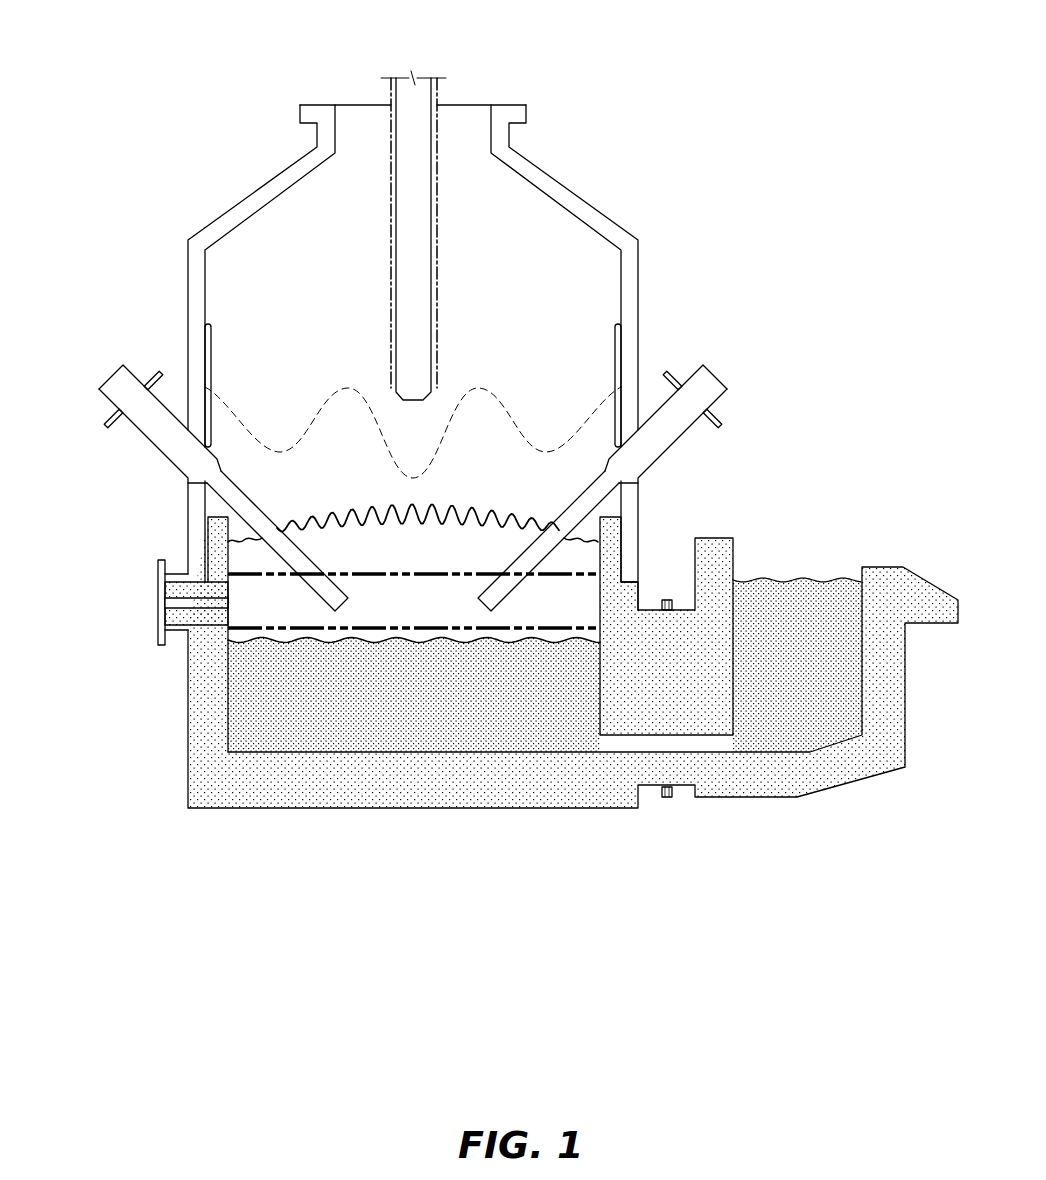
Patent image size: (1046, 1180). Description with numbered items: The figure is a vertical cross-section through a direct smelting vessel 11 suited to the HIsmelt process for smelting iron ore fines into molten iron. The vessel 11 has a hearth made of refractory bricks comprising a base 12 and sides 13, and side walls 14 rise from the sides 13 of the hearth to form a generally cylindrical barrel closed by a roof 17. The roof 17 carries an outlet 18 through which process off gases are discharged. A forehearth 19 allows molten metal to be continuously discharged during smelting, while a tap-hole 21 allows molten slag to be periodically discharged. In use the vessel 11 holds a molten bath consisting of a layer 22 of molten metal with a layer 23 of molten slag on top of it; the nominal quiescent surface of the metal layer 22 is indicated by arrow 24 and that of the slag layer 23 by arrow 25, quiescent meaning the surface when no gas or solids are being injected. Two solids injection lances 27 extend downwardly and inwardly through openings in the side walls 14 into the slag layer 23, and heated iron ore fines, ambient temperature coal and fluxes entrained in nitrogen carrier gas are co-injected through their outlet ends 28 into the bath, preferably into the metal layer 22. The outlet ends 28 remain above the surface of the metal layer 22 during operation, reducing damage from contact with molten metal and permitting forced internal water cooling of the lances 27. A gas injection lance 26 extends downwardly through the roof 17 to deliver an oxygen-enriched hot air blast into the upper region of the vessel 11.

The direct smelting vessel 11 is at (224, 203).
The base 12 is at (205, 780).
The sides 13 is at (205, 672).
The side walls 14 is at (198, 502).
The roof 17 is at (297, 173).
The outlet 18 is at (364, 136).
The forehearth 19 is at (787, 673).
The tap-hole 21 is at (157, 598).
The layer of molten metal 22 is at (560, 703).
The layer of molten slag 23 is at (414, 719).
The arrow indicating nominal quiescent surface of metal layer 24 is at (293, 630).
The arrow indicating nominal quiescent surface of slag layer 25 is at (257, 578).
The gas injection lance 26 is at (418, 268).
The solids injection lances 27 is at (108, 402).
The outlet ends 28 is at (332, 604).